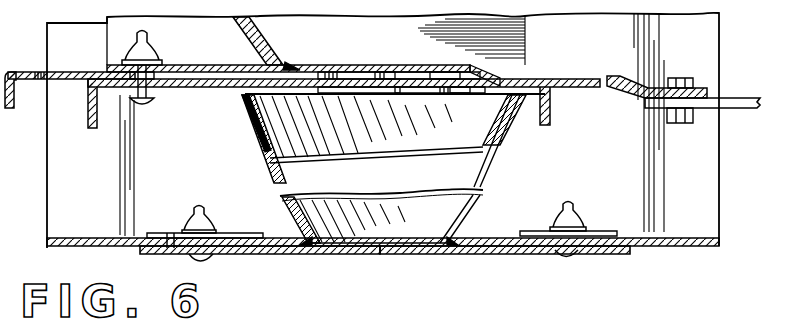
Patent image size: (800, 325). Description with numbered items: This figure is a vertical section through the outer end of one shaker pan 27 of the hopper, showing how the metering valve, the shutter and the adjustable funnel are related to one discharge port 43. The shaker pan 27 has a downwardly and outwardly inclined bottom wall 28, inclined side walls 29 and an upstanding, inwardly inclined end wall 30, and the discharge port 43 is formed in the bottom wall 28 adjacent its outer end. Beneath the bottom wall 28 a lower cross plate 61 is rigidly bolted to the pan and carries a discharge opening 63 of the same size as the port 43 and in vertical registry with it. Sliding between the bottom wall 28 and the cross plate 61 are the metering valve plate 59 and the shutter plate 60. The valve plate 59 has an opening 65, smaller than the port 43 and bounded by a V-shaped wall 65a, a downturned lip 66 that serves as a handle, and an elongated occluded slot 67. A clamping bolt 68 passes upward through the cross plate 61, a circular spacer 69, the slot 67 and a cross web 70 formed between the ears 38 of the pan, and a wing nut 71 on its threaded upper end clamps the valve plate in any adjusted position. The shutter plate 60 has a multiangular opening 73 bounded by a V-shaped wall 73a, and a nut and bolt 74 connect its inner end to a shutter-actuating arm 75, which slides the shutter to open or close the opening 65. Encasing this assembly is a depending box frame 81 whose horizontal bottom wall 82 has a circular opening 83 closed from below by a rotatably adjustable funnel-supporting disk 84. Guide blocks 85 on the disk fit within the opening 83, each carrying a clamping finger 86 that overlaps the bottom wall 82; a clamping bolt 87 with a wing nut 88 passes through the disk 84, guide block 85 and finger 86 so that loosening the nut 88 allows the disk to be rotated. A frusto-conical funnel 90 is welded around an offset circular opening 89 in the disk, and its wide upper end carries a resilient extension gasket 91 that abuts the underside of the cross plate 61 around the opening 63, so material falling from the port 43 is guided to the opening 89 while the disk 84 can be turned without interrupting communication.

The shaker pan 27 is at (548, 35).
The bottom wall 28 is at (528, 60).
The side wall 29 is at (246, 26).
The end wall 30 is at (268, 58).
The ear 38 is at (116, 36).
The discharge port 43 is at (446, 68).
The metering valve plate 59 is at (33, 72).
The shutter plate 60 is at (577, 86).
The lower cross plate 61 is at (181, 89).
The discharge opening 63 is at (455, 93).
The opening 65 is at (406, 68).
The V-shaped wall 65a is at (352, 68).
The downturned lip 66 is at (16, 94).
The occluded slot 67 is at (68, 79).
The clamping bolt 68 is at (148, 100).
The circular spacer 69 is at (162, 70).
The cross web 70 is at (224, 63).
The wing nut 71 is at (150, 42).
The multiangular opening 73 is at (358, 93).
The V-shaped wall 73a is at (430, 100).
The nut and bolt 74 is at (681, 123).
The shutter-actuating arm 75 is at (730, 109).
The box frame 81 is at (50, 187).
The bottom wall 82 is at (56, 237).
The circular opening 83 is at (172, 241).
The funnel-supporting disk 84 is at (278, 254).
The guide block 85 is at (300, 240).
The clamping finger 86 is at (228, 233).
The clamping bolt 87 is at (212, 262).
The wing nut 88 is at (188, 216).
The circular opening 89 is at (430, 254).
The frusto-conical funnel 90 is at (262, 160).
The extension gasket 91 is at (512, 118).